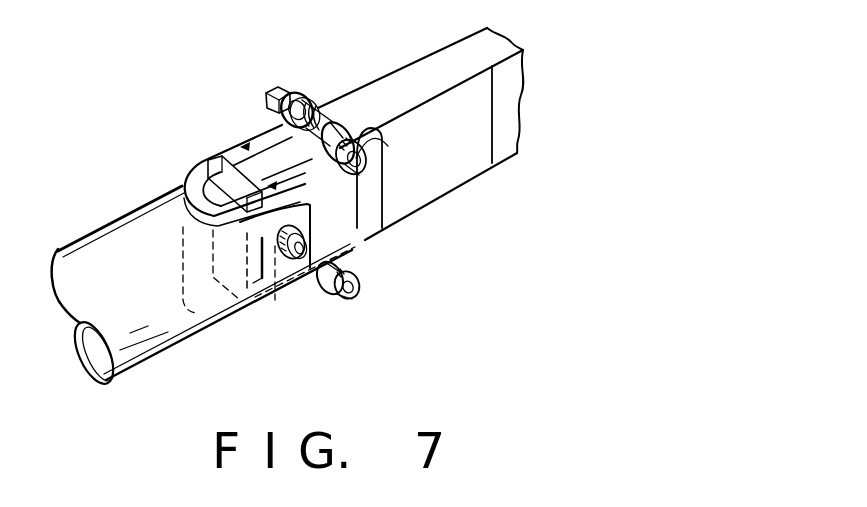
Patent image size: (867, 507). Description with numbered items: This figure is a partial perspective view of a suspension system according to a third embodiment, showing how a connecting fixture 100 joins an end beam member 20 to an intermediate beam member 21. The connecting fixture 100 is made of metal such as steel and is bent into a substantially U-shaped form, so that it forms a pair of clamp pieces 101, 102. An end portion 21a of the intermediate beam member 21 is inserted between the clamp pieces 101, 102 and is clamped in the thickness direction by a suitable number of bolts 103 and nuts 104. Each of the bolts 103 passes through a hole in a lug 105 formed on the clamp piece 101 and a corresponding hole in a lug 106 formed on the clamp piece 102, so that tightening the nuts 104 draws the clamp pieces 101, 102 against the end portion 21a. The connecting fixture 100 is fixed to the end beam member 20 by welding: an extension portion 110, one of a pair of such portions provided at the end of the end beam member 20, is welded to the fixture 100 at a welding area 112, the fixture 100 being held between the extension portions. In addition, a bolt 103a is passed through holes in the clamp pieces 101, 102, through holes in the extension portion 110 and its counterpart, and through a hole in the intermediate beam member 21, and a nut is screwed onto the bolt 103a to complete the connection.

The end beam member 20 is at (88, 233).
The intermediate beam member 21 is at (426, 76).
The end portion 21a is at (260, 162).
The connecting fixture 100 is at (388, 198).
The clamp piece 101 is at (364, 222).
The clamp piece 102 is at (196, 188).
The bolt 103 is at (362, 161).
The bolt 103a is at (291, 260).
The nut 104 is at (291, 90).
The lug 105 is at (382, 130).
The lug 106 is at (312, 95).
The extension portion 110 is at (254, 285).
The welding area 112 is at (254, 162).